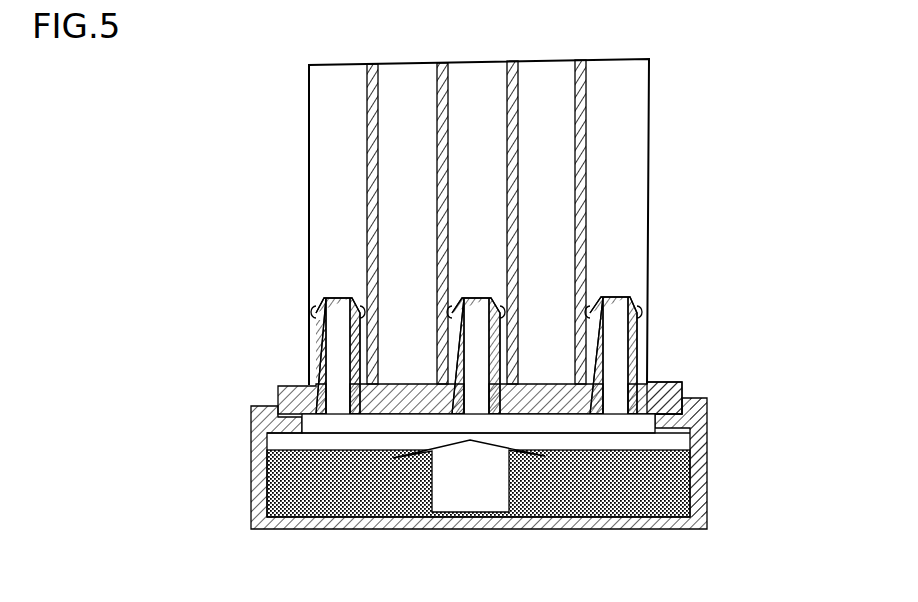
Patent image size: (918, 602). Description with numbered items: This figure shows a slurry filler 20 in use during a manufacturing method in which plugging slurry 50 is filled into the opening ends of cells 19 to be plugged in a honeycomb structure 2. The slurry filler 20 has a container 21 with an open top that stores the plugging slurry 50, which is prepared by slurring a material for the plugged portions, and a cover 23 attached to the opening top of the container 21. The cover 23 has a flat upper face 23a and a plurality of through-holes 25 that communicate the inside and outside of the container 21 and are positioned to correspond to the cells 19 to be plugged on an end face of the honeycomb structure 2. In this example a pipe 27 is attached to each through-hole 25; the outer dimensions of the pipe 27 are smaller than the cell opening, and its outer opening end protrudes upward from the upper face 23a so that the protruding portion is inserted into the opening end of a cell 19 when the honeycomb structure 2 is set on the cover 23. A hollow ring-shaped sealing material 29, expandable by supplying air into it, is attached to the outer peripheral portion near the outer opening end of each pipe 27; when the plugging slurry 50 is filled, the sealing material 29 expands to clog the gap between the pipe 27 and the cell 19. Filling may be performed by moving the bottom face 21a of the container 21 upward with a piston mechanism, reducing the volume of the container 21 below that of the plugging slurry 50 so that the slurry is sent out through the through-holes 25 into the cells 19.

The honeycomb structure 2 is at (648, 190).
The cell 19 is at (475, 270).
The sealing material 29 is at (316, 326).
The pipe 27 is at (316, 345).
The through-hole 25 is at (309, 372).
The cover 23 is at (277, 391).
The upper face 23a is at (668, 380).
The container 21 is at (248, 449).
The bottom face 21a is at (638, 511).
The slurry filler 20 is at (713, 445).
The plugging slurry 50 is at (282, 497).